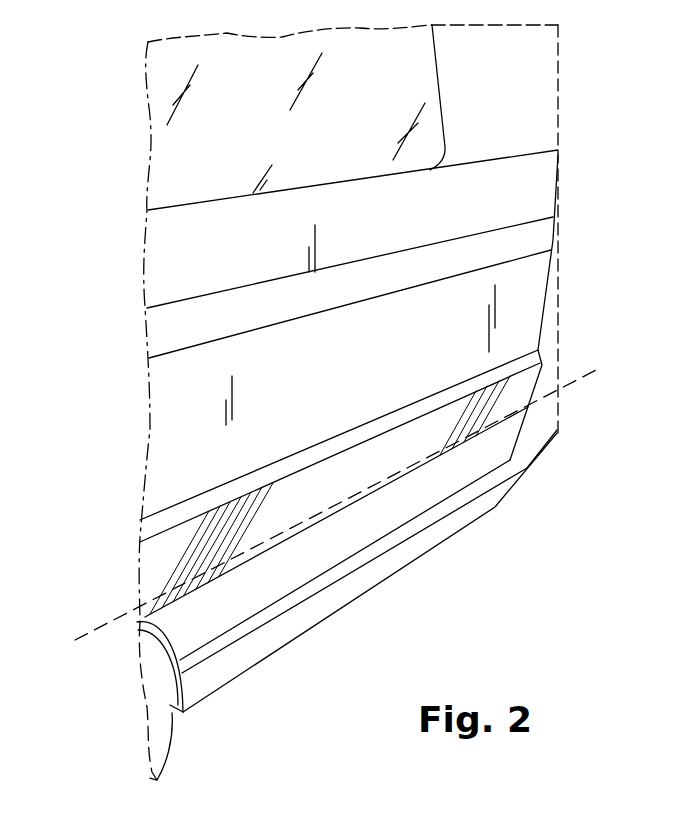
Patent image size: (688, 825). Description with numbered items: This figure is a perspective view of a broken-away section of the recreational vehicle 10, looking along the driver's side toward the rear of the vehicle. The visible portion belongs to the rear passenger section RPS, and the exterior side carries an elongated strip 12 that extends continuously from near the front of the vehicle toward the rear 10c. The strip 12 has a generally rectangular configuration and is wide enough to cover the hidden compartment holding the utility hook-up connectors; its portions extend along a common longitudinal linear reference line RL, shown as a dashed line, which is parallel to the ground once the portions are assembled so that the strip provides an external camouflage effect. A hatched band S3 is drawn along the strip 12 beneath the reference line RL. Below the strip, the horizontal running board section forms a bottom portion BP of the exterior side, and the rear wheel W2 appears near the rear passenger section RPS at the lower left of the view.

The recreational vehicle 10 is at (130, 61).
The rear passenger section RPS is at (126, 262).
The rear of the vehicle 10c is at (538, 270).
The elongated strip 12 is at (436, 410).
The third surface S3 is at (293, 492).
The longitudinal linear reference line RL is at (566, 378).
The bottom portion BP is at (410, 572).
The rear wheel W2 is at (167, 730).